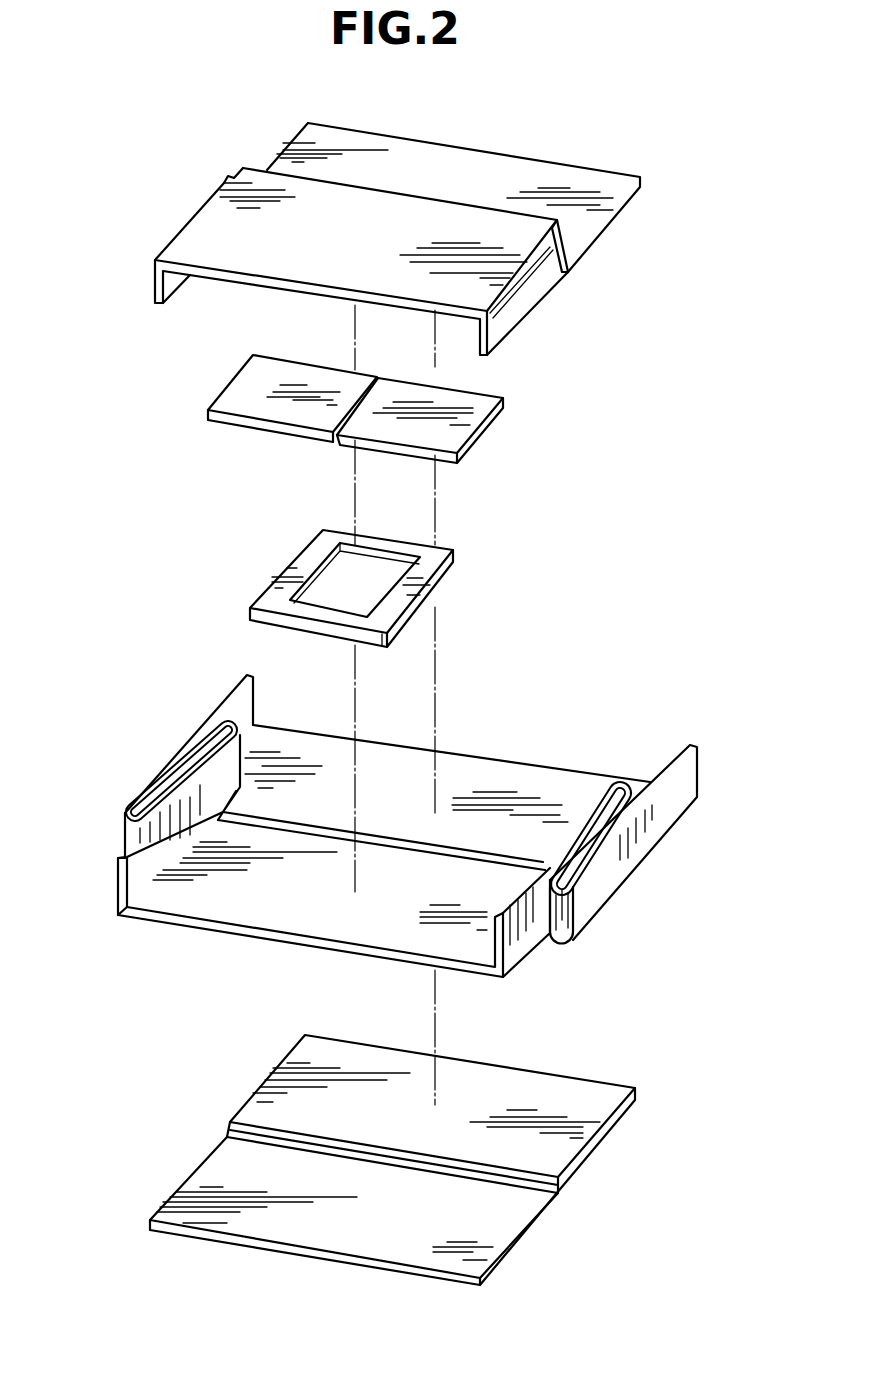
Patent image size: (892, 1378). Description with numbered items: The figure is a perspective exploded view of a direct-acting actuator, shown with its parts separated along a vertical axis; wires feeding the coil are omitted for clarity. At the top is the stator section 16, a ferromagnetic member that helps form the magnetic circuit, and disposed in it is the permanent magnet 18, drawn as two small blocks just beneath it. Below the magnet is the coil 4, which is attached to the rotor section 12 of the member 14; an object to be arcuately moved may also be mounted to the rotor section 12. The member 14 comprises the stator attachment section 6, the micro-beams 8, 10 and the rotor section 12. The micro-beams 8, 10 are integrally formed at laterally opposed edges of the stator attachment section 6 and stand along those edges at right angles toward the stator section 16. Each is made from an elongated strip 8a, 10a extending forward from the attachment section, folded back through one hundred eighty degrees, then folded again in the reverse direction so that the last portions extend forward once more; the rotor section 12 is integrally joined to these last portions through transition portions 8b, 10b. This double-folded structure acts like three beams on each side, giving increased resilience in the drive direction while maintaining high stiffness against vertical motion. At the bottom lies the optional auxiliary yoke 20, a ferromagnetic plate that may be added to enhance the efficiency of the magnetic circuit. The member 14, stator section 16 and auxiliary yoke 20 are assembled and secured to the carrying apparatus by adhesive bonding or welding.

The coil 4 is at (305, 563).
The stator attachment section 6 is at (463, 780).
The micro-beam 8 is at (603, 903).
The elongated strip 8a is at (650, 842).
The transition portion 8b is at (483, 948).
The micro-beam 10 is at (134, 826).
The elongated strip 10a is at (243, 712).
The transition portion 10b is at (163, 897).
The rotor section 12 is at (318, 883).
The member 14 is at (592, 747).
The stator section 16 is at (233, 235).
The permanent magnet 18 is at (258, 390).
The auxiliary yoke 20 is at (488, 1225).